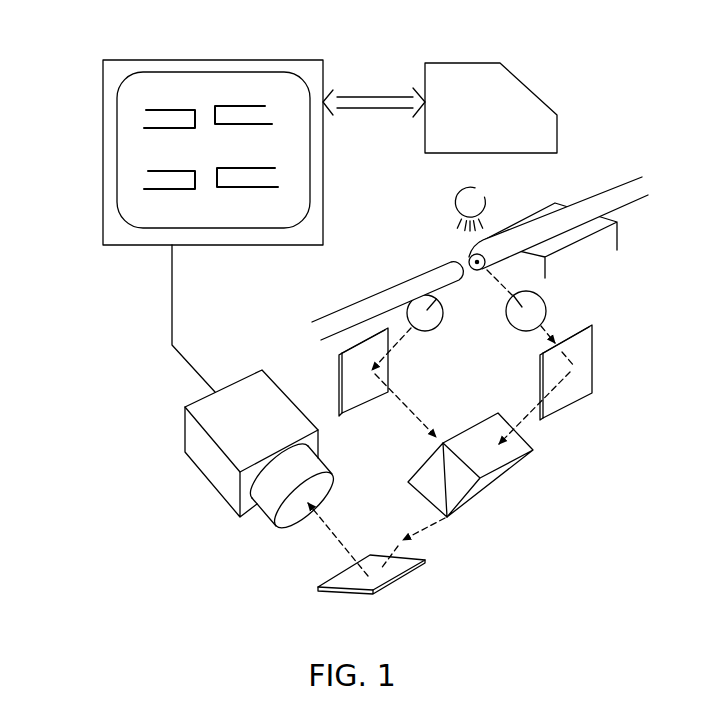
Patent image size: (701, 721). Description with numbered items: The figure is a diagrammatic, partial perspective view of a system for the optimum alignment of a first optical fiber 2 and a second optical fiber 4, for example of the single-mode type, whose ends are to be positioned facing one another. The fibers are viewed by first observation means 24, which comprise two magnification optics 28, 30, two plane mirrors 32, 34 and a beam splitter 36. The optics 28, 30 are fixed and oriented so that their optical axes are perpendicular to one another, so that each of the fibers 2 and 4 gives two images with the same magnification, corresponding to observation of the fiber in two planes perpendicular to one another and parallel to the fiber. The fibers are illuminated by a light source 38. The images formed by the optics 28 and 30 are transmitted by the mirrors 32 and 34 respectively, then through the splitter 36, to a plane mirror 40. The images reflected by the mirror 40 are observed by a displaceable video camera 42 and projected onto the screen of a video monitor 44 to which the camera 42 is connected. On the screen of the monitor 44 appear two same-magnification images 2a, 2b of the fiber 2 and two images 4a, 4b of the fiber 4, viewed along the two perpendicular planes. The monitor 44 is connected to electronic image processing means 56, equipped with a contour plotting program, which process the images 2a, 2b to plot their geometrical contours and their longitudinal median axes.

The first optical fiber 2 is at (378, 295).
The second optical fiber 4 is at (618, 186).
The image of fiber 2 2a is at (172, 113).
The image of fiber 2 2b is at (177, 182).
The image of fiber 4 4a is at (263, 106).
The image of fiber 4 4b is at (245, 185).
The first observation means 24 is at (512, 522).
The magnification optics 28 is at (443, 317).
The magnification optics 30 is at (546, 308).
The plane mirror 32 is at (352, 377).
The plane mirror 34 is at (577, 393).
The beam splitter 36 is at (524, 480).
The light source 38 is at (484, 191).
The plane mirror 40 is at (393, 575).
The video camera 42 is at (181, 448).
The video monitor 44 is at (200, 57).
The electronic image processing means 56 is at (465, 62).